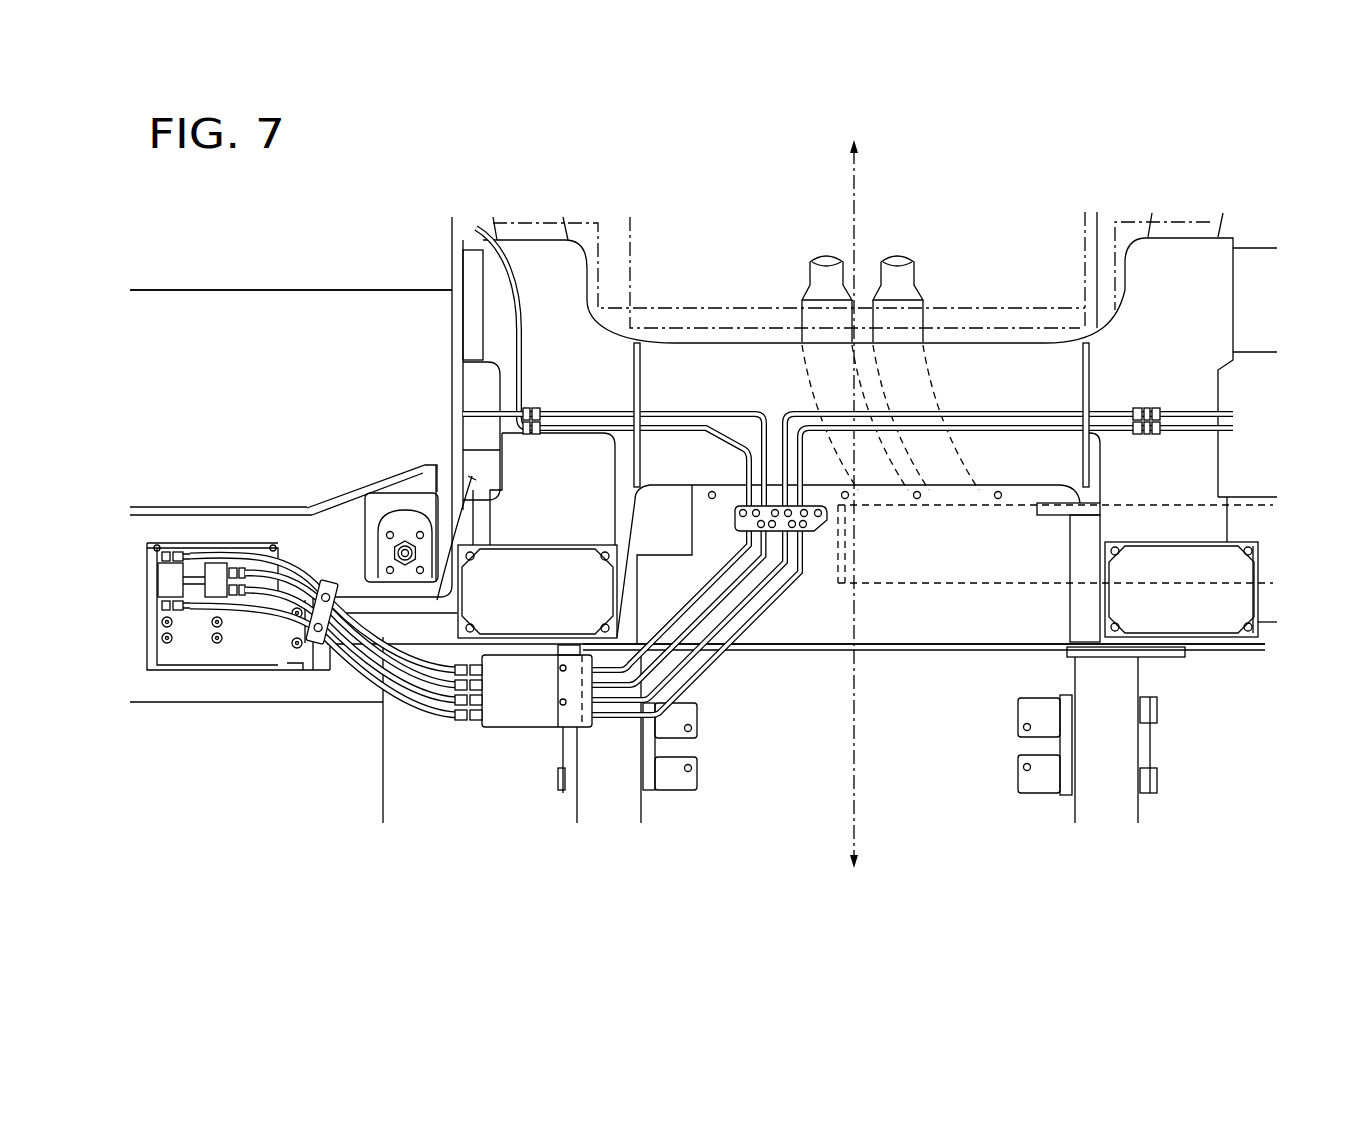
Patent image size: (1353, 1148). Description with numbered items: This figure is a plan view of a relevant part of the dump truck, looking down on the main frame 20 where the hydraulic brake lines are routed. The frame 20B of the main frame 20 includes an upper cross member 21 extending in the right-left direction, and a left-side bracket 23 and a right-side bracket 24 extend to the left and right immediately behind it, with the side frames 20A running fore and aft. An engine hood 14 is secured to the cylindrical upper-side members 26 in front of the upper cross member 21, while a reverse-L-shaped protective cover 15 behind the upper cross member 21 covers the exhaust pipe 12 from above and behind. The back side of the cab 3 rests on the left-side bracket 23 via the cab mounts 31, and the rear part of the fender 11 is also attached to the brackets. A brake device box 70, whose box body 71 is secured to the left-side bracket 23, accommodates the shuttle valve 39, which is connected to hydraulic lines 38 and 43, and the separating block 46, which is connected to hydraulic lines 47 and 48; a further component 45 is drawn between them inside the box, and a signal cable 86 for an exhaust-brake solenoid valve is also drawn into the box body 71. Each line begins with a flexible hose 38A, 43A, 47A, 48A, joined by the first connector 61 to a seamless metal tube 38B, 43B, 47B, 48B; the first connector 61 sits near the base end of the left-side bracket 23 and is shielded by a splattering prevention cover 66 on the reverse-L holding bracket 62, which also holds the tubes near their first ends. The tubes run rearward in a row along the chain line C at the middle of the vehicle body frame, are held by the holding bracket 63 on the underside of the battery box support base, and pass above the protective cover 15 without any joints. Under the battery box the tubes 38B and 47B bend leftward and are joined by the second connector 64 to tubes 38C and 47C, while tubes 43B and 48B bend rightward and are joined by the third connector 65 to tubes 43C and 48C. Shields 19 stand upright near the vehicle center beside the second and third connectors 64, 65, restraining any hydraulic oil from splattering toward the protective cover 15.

The cab 3 is at (302, 307).
The fender 11 is at (372, 812).
The exhaust pipe 12 is at (956, 585).
The engine hood 14 is at (1198, 245).
The protective cover 15 is at (876, 655).
The shield 19 is at (632, 352).
The main frame 20 is at (1172, 838).
The side frame 20A is at (592, 806).
The frame 20B is at (851, 285).
The upper cross member 21 is at (712, 358).
The left-side bracket 23 is at (446, 600).
The right-side bracket 24 is at (1255, 497).
The upper-side member 26 is at (492, 228).
The cab mount 31 is at (403, 510).
The hydraulic line 38 is at (677, 560).
The flexible hose 38A is at (301, 558).
The metal tube 38B is at (722, 633).
The tube 38C is at (523, 358).
The shuttle valve 39 is at (170, 560).
The hydraulic line 43 is at (695, 626).
The flexible hose 43A is at (350, 673).
The metal tube 43B is at (700, 678).
The tube 43C is at (1234, 432).
The joint 45 is at (197, 580).
The separating block 46 is at (218, 577).
The hydraulic line 47 is at (721, 608).
The flexible hose 47A is at (350, 585).
The metal tube 47B is at (740, 570).
The tube 47C is at (481, 412).
The hydraulic line 48 is at (710, 615).
The flexible hose 48A is at (370, 688).
The metal tube 48B is at (728, 601).
The tube 48C is at (1234, 412).
The first connector 61 is at (515, 723).
The holding bracket 62 is at (557, 690).
The holding bracket 63 is at (823, 534).
The second connector 64 is at (560, 408).
The third connector 65 is at (1143, 398).
The splattering prevention cover 66 is at (506, 730).
The brake device box 70 is at (238, 601).
The box body 71 is at (234, 655).
The signal cable 86 is at (320, 582).
The chain line C is at (858, 232).